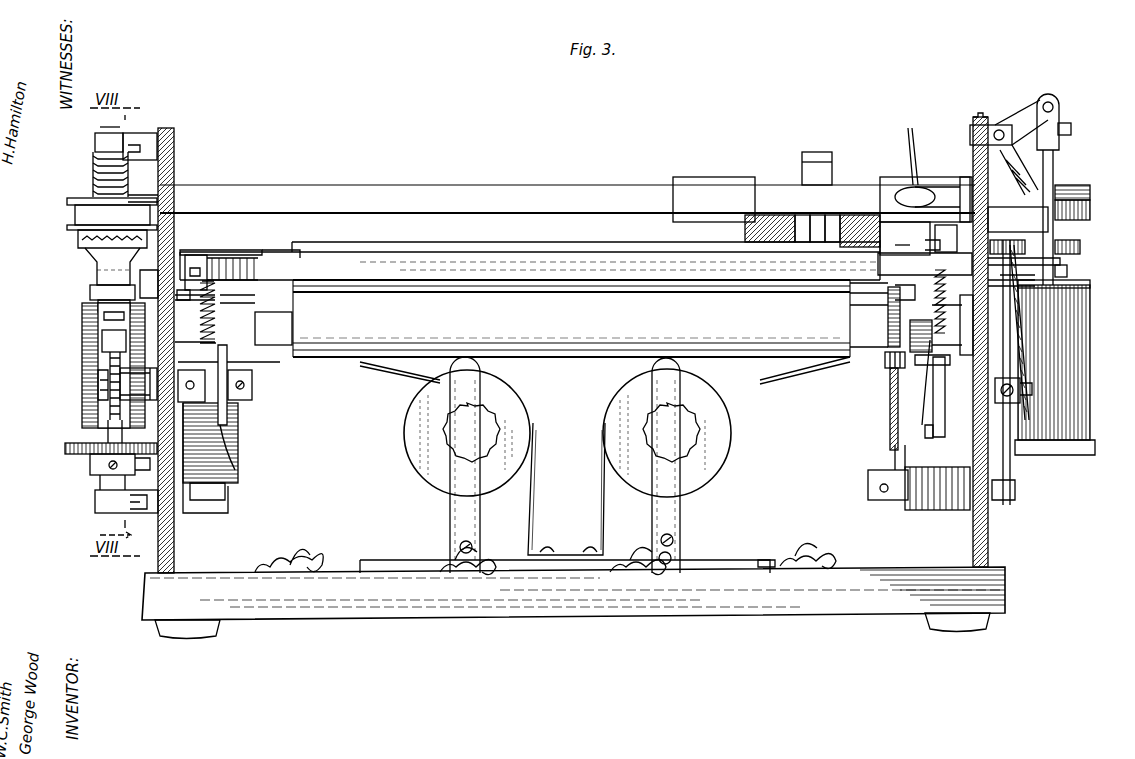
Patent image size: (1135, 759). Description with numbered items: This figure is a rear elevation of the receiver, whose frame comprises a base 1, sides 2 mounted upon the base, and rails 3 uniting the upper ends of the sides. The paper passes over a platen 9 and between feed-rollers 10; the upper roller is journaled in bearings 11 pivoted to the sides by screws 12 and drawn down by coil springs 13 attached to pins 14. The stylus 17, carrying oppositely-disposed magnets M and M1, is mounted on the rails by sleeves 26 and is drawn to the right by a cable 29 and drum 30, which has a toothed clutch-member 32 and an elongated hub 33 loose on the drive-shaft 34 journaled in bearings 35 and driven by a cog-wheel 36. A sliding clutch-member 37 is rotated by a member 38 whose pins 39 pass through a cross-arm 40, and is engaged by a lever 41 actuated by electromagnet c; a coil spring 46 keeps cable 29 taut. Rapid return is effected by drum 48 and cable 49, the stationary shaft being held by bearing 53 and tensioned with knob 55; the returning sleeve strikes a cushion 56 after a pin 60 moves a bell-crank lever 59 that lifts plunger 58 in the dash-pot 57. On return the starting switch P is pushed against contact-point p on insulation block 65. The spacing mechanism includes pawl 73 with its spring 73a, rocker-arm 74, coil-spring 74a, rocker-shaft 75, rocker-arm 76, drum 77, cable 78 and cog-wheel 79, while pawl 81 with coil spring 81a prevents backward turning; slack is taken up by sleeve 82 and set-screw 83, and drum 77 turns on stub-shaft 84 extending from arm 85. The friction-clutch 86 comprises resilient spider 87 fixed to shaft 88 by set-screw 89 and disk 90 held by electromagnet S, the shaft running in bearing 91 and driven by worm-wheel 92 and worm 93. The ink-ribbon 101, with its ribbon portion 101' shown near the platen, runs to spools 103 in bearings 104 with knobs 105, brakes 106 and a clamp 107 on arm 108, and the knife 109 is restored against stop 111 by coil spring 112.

The base 1 is at (600, 605).
The sides 2 is at (175, 548).
The rails 3 is at (567, 199).
The platen 9 is at (285, 300).
The feed-rollers 10 is at (585, 243).
The bearings 11 is at (190, 255).
The screws 12 is at (225, 252).
The coil springs 13 is at (225, 352).
The pins 14 is at (955, 368).
The stylus 17 is at (817, 153).
The sleeves 26 is at (712, 185).
The cable 29 is at (160, 205).
The drum 30 is at (66, 208).
The toothed clutch-member 32 is at (76, 232).
The elongated hub 33 is at (92, 168).
The drive-shaft 34 is at (100, 485).
The bearings 35 is at (93, 137).
The cog-wheel 36 is at (65, 450).
The toothed clutch-member 37 is at (82, 252).
The member 38 is at (96, 345).
The pins 39 is at (85, 310).
The cross-arm 40 is at (96, 322).
The lever 41 is at (88, 290).
The coil spring 46 is at (92, 180).
The drum 48 is at (1018, 219).
The cable 49 is at (1090, 195).
The bearing 53 is at (1058, 163).
The knob 55 is at (1076, 125).
The cushion 56 is at (965, 185).
The dash-pot 57 is at (1040, 452).
The plunger 58 is at (1048, 108).
The bell-crank lever 59 is at (1016, 105).
The pin 60 is at (927, 197).
The block of insulation 65 is at (943, 235).
The pawl 73 is at (885, 365).
The spring 73a is at (886, 405).
The rocker-arm 74 is at (890, 460).
The coil-spring 74a is at (935, 512).
The rocker-shaft 75 is at (866, 487).
The rocker-arm 76 is at (1018, 495).
The drum 77 is at (1077, 270).
The cable 78 is at (1065, 262).
The cog-wheel 79 is at (1080, 246).
The pawl 81 is at (850, 320).
The coil spring 81a is at (885, 345).
The sleeve 82 is at (1022, 380).
The set-screw 83 is at (1020, 400).
The stub-shaft 84 is at (1018, 300).
The arm 85 is at (1037, 283).
The friction-clutch 86 is at (235, 415).
The resilient spider 87 is at (238, 430).
The shaft 88 is at (255, 393).
The set-screw 89 is at (255, 383).
The disk 90 is at (238, 455).
The bearing 91 is at (138, 384).
The worm-wheel 92 is at (105, 410).
The worm 93 is at (95, 390).
The ink-ribbon 101 is at (602, 374).
The coupling 101' is at (233, 320).
The spools 103 is at (520, 405).
The bearings 104 is at (450, 518).
The knobs 105 is at (571, 432).
The resilient brakes 106 is at (604, 448).
The resilient clamp 107 is at (915, 260).
The arm 108 is at (942, 443).
The knife 109 is at (530, 260).
The stop 111 is at (279, 241).
The coil spring 112 is at (258, 265).
The magnets M is at (860, 231).
The magnets M1 is at (792, 228).
The starting switch P is at (910, 238).
The contact-point p is at (900, 247).
The electromagnet S is at (230, 478).
The electromagnet c is at (105, 368).